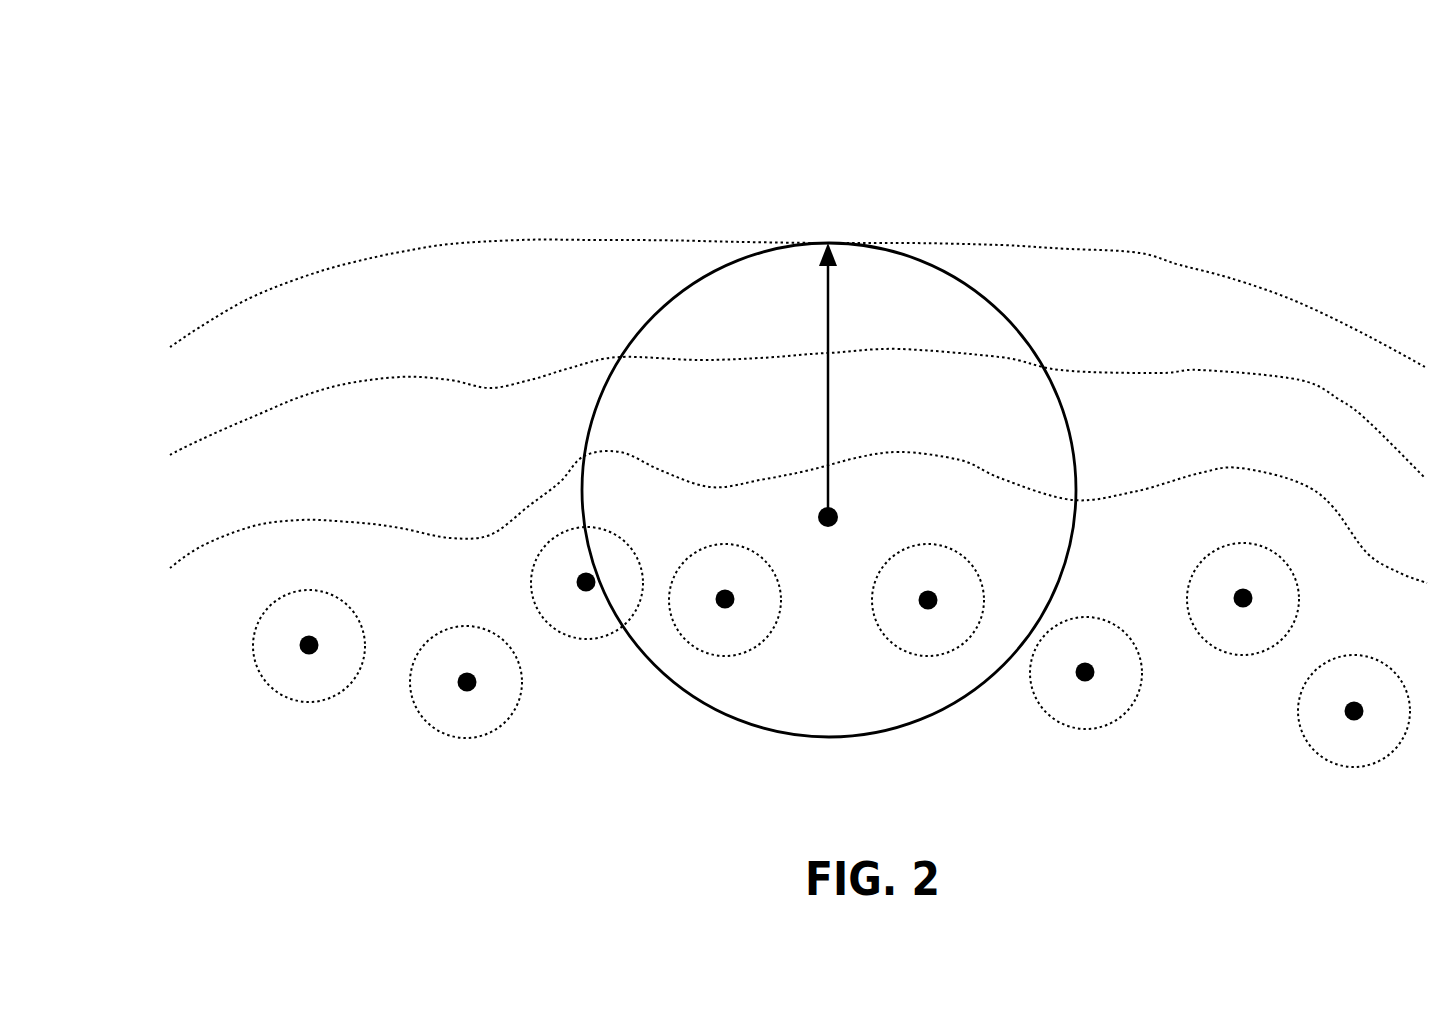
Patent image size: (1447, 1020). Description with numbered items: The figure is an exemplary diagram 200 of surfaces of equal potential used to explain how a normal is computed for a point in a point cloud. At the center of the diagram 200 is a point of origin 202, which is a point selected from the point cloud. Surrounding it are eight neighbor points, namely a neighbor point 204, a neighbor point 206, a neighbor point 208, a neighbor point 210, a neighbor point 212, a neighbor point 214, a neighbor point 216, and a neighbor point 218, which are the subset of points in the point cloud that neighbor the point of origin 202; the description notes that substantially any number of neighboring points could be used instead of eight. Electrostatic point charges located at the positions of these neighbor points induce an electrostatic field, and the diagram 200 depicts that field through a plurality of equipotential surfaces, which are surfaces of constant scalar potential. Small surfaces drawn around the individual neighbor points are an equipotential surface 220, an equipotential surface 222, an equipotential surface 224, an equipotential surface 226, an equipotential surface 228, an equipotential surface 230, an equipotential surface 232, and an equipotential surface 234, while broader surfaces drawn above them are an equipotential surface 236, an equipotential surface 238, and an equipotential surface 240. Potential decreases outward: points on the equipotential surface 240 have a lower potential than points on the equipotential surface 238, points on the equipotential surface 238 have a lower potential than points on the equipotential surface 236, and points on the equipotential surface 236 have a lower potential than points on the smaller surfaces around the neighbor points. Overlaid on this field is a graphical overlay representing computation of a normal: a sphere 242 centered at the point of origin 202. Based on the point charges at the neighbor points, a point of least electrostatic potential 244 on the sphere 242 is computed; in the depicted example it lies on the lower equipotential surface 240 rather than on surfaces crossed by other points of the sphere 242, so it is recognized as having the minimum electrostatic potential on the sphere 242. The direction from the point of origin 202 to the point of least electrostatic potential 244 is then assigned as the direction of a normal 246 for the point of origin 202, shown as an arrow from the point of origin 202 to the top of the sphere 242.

The diagram 200 is at (257, 94).
The point of origin 202 is at (819, 519).
The neighbor point 204 is at (308, 652).
The neighbor point 206 is at (466, 688).
The neighbor point 208 is at (586, 575).
The neighbor point 210 is at (727, 604).
The neighbor point 212 is at (926, 606).
The neighbor point 214 is at (1084, 678).
The neighbor point 216 is at (1241, 604).
The neighbor point 218 is at (1352, 717).
The equipotential surface 220 is at (293, 590).
The equipotential surface 222 is at (468, 627).
The equipotential surface 224 is at (532, 585).
The equipotential surface 226 is at (718, 545).
The equipotential surface 228 is at (943, 545).
The equipotential surface 230 is at (1075, 618).
The equipotential surface 232 is at (1233, 545).
The equipotential surface 234 is at (1363, 655).
The equipotential surface 236 is at (1198, 473).
The equipotential surface 238 is at (1160, 373).
The equipotential surface 240 is at (1140, 253).
The sphere 242 is at (1003, 315).
The point of least electrostatic potential 244 is at (829, 244).
The normal 246 is at (830, 433).